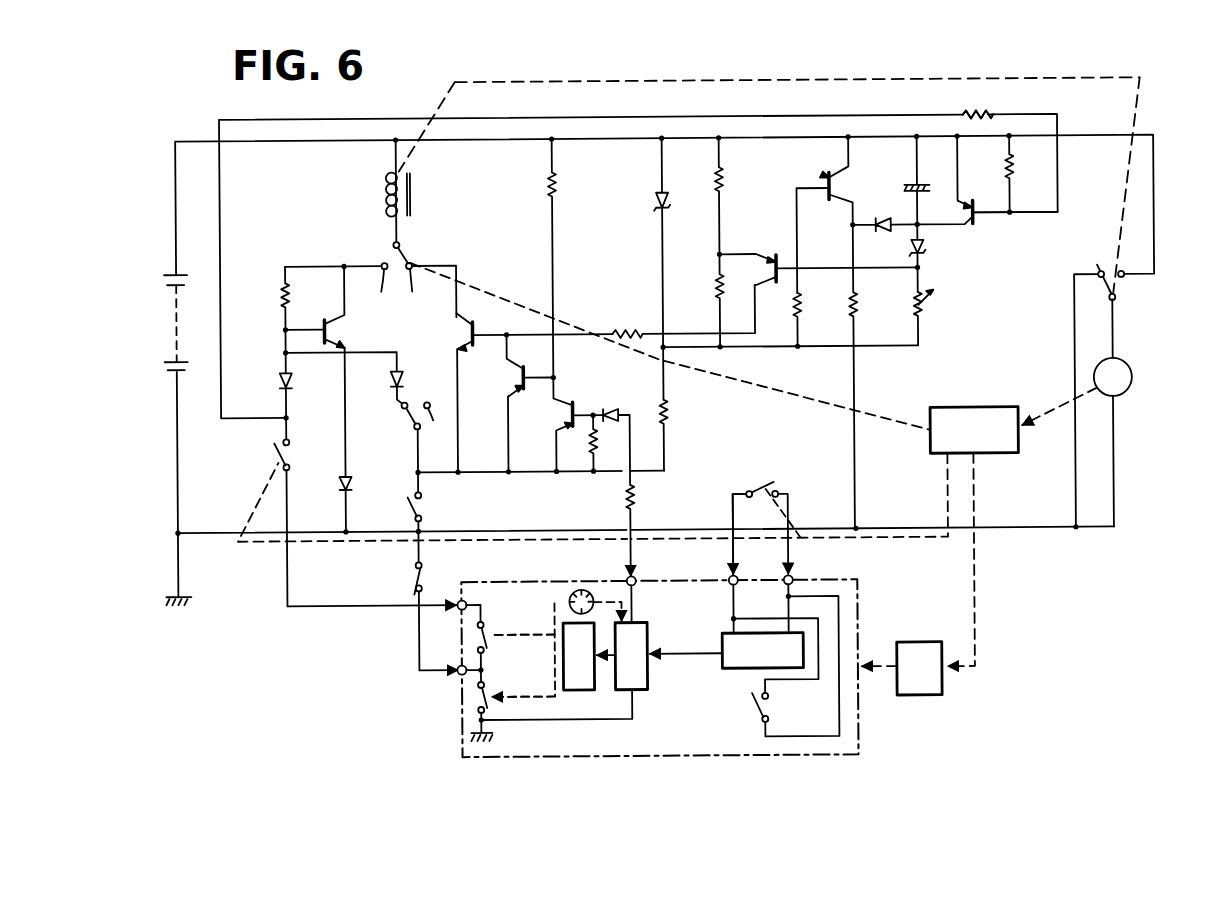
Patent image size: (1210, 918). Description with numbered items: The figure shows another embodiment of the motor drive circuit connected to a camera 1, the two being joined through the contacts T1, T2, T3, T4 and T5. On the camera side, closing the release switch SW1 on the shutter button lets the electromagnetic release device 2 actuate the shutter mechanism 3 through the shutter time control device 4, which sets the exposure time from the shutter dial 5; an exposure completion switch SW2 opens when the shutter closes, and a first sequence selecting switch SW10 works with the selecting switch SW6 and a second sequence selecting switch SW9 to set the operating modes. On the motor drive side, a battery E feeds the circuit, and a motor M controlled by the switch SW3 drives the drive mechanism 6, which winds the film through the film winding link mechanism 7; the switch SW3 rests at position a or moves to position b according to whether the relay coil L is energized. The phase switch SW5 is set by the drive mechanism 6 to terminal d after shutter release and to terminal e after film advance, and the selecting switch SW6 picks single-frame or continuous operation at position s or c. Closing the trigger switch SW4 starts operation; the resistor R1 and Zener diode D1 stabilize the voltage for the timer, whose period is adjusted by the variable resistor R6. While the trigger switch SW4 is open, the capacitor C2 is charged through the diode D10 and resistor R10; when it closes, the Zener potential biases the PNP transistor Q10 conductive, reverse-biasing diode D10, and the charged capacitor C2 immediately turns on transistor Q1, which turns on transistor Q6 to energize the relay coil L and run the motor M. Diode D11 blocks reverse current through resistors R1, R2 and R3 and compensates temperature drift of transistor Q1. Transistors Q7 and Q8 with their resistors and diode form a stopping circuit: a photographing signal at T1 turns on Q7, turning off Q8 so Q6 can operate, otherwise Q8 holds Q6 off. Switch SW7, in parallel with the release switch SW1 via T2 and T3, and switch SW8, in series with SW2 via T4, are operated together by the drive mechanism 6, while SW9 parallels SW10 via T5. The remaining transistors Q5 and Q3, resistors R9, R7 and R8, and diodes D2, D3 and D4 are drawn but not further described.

The battery E is at (175, 324).
The relay coil L is at (416, 193).
The phase switch SW5 is at (391, 260).
The terminal d is at (383, 294).
The terminal e is at (412, 296).
The resistor R9 is at (284, 292).
The transistor Q5 is at (337, 327).
The transistor Q6 is at (472, 302).
The transistor Q7 is at (558, 420).
The transistor Q8 is at (510, 381).
The diode D2 is at (293, 381).
The diode D3 is at (405, 378).
The diode D4 is at (341, 484).
The selecting switch SW6 is at (386, 432).
The position s is at (400, 409).
The position c is at (437, 425).
The switch SW8 is at (274, 454).
The trigger switch SW4 is at (425, 505).
The second sequence selecting switch SW9 is at (412, 578).
The Zener diode D1 is at (656, 204).
The resistor R1 is at (672, 409).
The resistor R2 is at (728, 182).
The resistor R3 is at (716, 288).
The transistor Q1 is at (766, 289).
The transistor Q10 is at (826, 215).
The diode D10 is at (884, 220).
The resistor R10 is at (862, 306).
The capacitor C2 is at (912, 184).
The diode D11 is at (927, 262).
The variable resistor R6 is at (936, 307).
The transistor Q3 is at (968, 226).
The resistor R7 is at (1005, 172).
The resistor R8 is at (999, 113).
The switch SW3 is at (1121, 293).
The position a is at (1100, 274).
The position b is at (1123, 273).
The motor M is at (1113, 412).
The drive mechanism 6 is at (978, 408).
The film winding link mechanism 7 is at (918, 698).
The camera 1 is at (858, 608).
The terminal T1 is at (628, 576).
The terminal T2 is at (791, 576).
The terminal T3 is at (729, 577).
The terminal T4 is at (458, 600).
The terminal T5 is at (456, 673).
The switch SW7 is at (770, 482).
The exposure completion switch SW2 is at (489, 629).
The first sequence selecting switch SW10 is at (487, 682).
The release switch SW1 is at (750, 703).
The shutter dial 5 is at (567, 598).
The shutter mechanism 3 is at (578, 656).
The shutter time control device 4 is at (622, 656).
The electromagnetic release device 2 is at (727, 651).